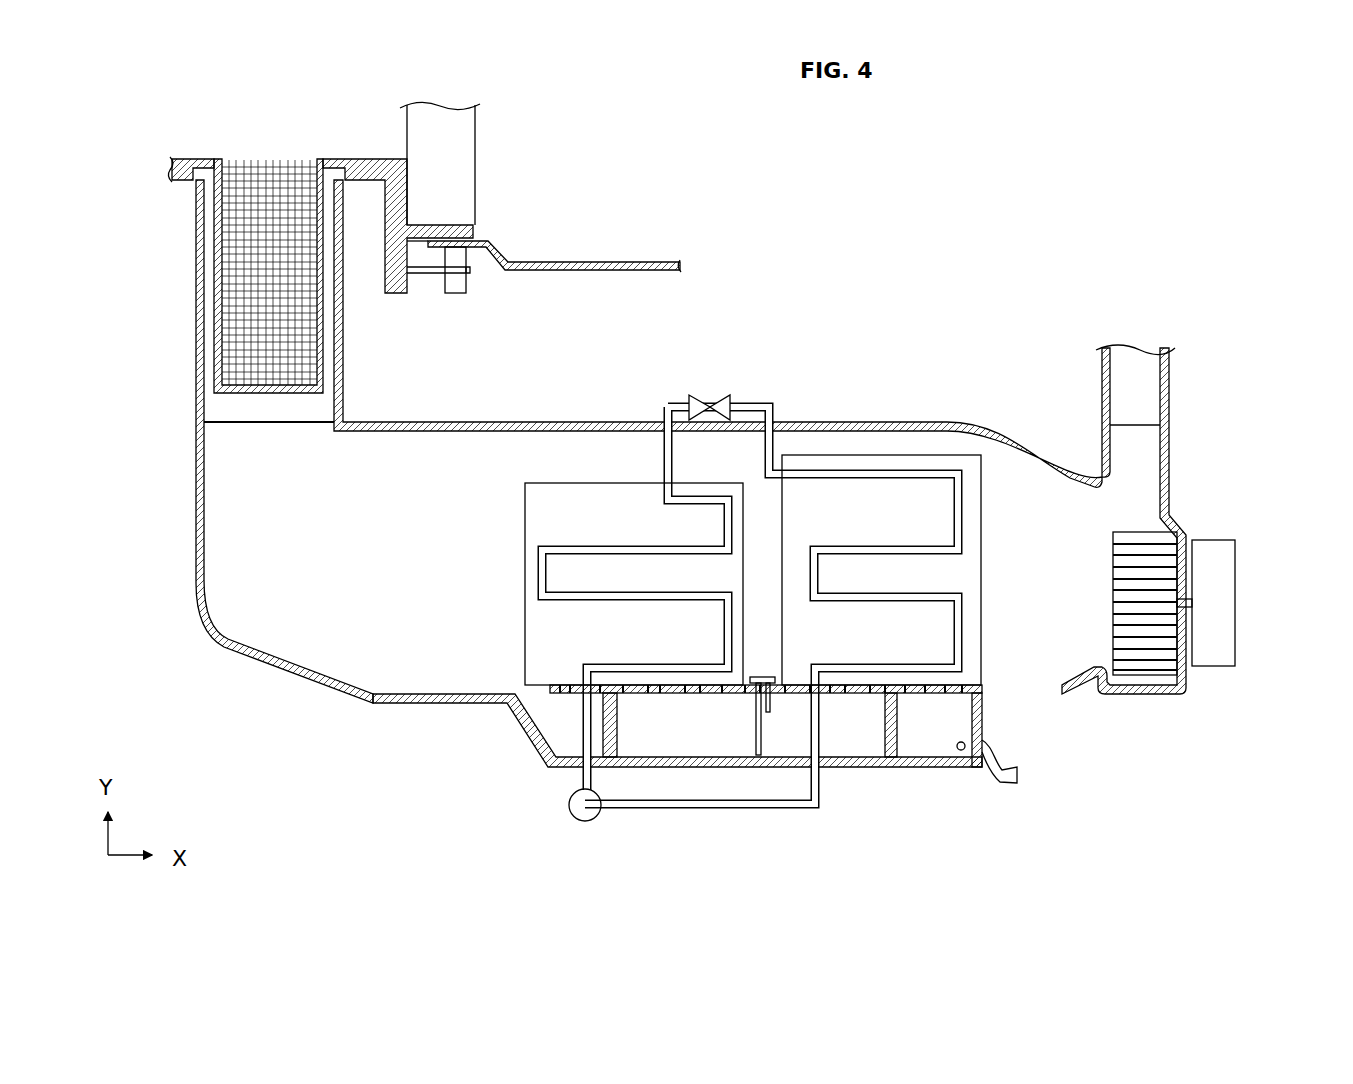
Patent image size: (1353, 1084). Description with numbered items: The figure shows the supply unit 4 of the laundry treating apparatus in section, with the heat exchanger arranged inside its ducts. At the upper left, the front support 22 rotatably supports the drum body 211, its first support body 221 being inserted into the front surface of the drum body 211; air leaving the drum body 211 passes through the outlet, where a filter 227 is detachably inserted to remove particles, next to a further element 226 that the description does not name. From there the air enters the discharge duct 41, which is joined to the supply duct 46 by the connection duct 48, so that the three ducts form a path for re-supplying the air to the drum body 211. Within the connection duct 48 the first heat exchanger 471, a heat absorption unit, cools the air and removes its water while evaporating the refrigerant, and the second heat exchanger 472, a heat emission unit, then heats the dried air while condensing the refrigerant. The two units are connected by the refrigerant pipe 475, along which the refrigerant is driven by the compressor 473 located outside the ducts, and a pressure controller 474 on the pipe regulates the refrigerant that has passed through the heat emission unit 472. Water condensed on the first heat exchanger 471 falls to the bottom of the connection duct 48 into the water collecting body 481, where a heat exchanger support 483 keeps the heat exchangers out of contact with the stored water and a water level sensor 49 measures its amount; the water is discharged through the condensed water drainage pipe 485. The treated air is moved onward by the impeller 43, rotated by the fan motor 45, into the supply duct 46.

The supply unit 4 is at (753, 626).
The front support 22 is at (390, 268).
The first support body 221 is at (470, 232).
The drum body 211 is at (665, 262).
The filter seating flange 226 is at (327, 178).
The filter 227 is at (205, 302).
The discharge duct 41 is at (196, 387).
The connection duct 48 is at (196, 508).
The supply duct 46 is at (1160, 398).
The impeller 43 is at (1160, 542).
The fan motor 45 is at (1223, 604).
The first heat exchanger (heat absorption unit) 471 is at (657, 643).
The second heat exchanger (heat emission unit) 472 is at (812, 637).
The compressor 473 is at (590, 820).
The pressure controller 474 is at (735, 398).
The refrigerant pipe 475 is at (718, 810).
The water level sensor 49 is at (763, 730).
The heat exchanger support 483 is at (863, 695).
The water collecting body 481 is at (925, 737).
The condensed water drainage pipe 485 is at (1001, 790).